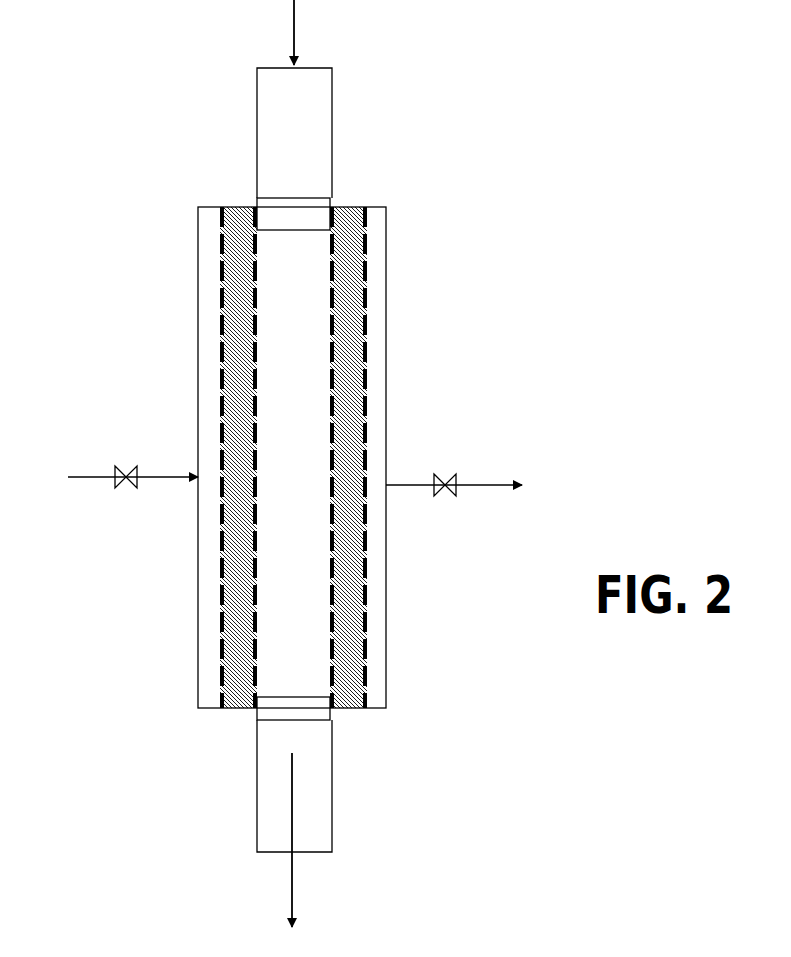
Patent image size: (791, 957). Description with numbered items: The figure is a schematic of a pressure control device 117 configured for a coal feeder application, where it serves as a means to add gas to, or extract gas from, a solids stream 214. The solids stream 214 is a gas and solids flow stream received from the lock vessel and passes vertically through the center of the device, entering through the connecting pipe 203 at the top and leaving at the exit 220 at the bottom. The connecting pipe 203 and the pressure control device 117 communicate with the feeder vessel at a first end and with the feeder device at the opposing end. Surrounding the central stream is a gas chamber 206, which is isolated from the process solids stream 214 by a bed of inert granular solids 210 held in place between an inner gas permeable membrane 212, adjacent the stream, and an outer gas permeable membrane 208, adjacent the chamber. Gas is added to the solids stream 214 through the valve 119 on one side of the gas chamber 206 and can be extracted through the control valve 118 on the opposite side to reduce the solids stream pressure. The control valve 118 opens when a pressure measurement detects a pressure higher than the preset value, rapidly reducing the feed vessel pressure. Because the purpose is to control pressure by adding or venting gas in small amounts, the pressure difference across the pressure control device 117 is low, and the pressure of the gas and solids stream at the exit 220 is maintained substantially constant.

The pressure control device 117 is at (415, 212).
The control valve 118 is at (447, 472).
The valve 119 is at (120, 465).
The connecting pipe 203 is at (333, 140).
The gas chamber 206 is at (212, 362).
The outer gas permeable membrane 208 is at (220, 625).
The bed of inert granular solids 210 is at (365, 308).
The inner gas permeable membrane 212 is at (365, 358).
The solids stream 214 is at (293, 463).
The exit 220 is at (306, 812).